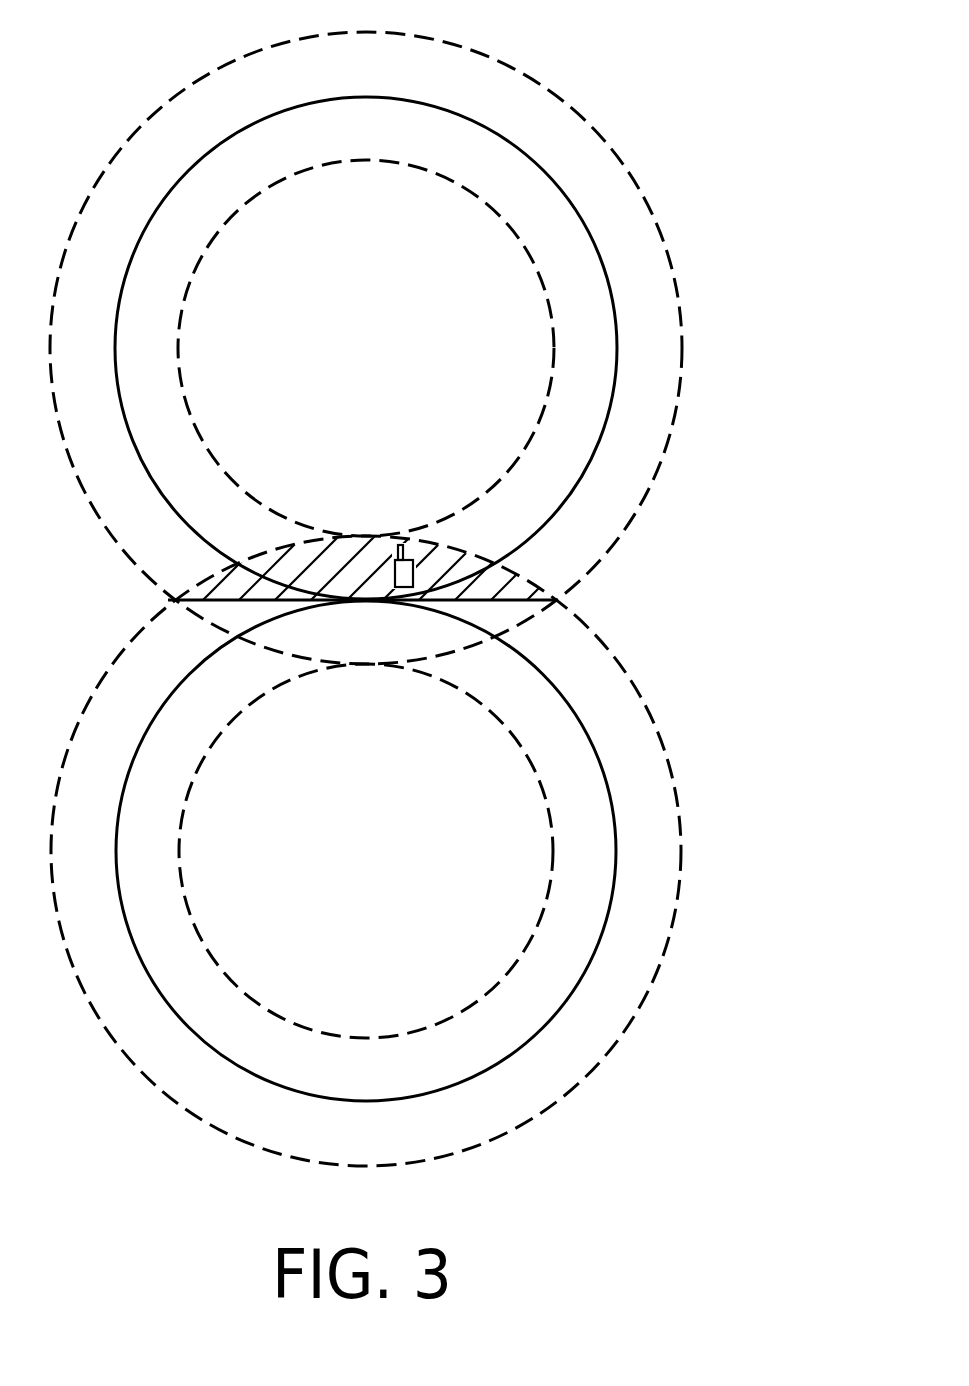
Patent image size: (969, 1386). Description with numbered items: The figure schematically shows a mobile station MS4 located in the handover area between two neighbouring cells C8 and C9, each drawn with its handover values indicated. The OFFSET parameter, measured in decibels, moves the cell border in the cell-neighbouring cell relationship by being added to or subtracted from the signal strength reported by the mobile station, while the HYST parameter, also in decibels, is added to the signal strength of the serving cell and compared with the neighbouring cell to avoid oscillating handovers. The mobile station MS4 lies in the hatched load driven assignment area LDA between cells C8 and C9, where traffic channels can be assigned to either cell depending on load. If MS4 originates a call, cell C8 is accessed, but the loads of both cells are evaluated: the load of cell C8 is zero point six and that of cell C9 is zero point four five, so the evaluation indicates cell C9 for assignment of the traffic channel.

The cell C8 is at (433, 332).
The cell C9 is at (390, 729).
The OFFSET handover parameter OFFSET is at (507, 138).
The HYST handover parameter HYST is at (627, 173).
The load driven assignment area LDA is at (450, 543).
The mobile station MS4 is at (373, 566).